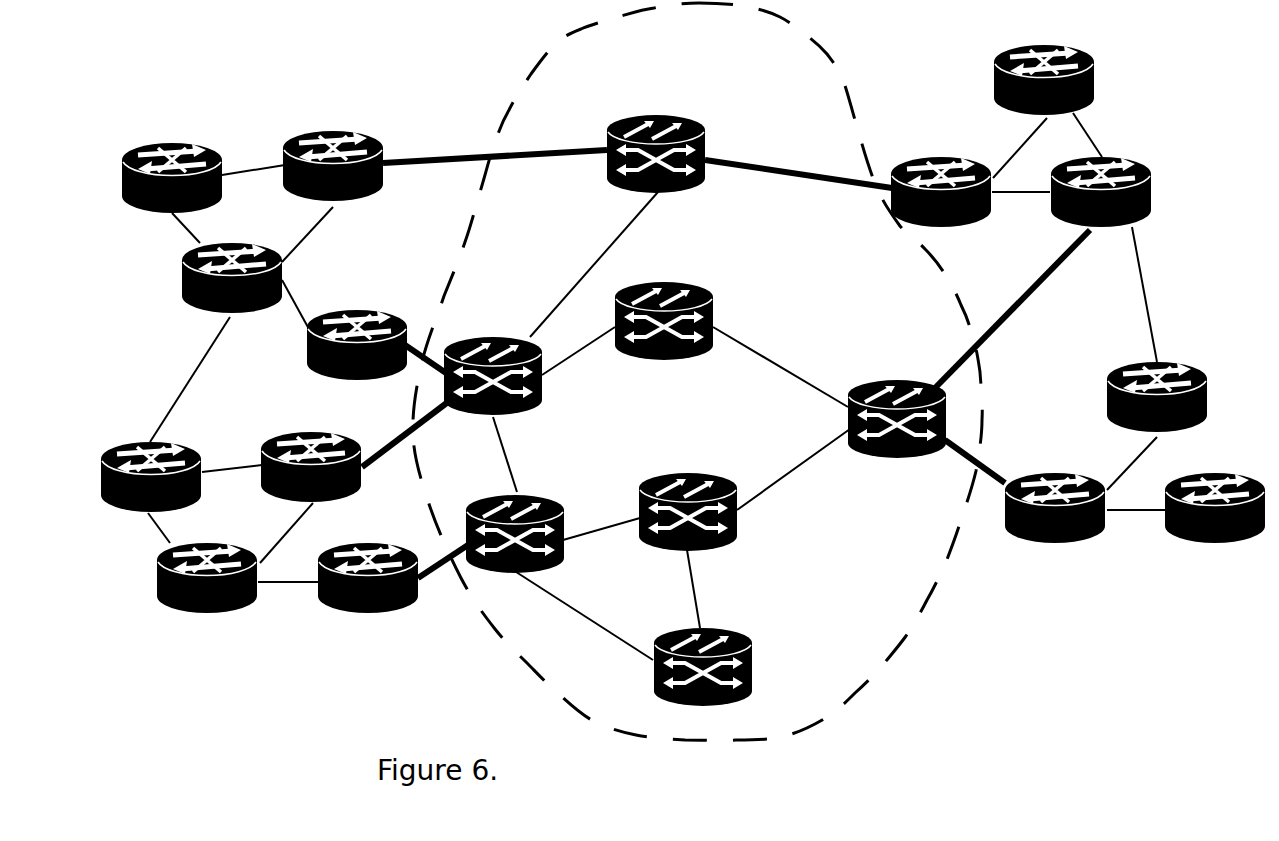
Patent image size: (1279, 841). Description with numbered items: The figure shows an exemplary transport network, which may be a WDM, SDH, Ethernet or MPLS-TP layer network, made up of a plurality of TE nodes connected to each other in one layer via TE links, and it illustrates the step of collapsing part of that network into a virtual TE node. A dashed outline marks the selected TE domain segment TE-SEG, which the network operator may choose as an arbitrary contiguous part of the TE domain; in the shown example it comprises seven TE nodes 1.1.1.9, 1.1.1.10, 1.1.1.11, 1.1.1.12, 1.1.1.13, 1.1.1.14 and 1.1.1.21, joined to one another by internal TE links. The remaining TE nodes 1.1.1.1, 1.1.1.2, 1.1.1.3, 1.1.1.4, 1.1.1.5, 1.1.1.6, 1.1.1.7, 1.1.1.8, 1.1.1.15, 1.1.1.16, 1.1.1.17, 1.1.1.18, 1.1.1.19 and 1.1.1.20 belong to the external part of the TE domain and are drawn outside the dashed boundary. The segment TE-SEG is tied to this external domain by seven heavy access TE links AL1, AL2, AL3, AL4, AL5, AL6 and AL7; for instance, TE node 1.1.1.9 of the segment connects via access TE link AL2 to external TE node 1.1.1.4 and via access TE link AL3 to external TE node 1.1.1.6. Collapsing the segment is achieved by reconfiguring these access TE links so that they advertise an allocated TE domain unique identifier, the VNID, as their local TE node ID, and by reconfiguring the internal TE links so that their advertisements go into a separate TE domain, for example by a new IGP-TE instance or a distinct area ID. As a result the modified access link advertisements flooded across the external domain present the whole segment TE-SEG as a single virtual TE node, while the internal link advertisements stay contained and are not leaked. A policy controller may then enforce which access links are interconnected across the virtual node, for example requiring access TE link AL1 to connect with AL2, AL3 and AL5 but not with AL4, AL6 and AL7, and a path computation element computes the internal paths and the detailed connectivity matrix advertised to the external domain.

The TE node 1.1.1.1 is at (172, 160).
The TE node 1.1.1.2 is at (232, 267).
The TE node 1.1.1.3 is at (333, 147).
The TE node 1.1.1.4 is at (357, 333).
The TE node 1.1.1.5 is at (151, 458).
The TE node 1.1.1.6 is at (311, 455).
The TE node 1.1.1.7 is at (207, 566).
The TE node 1.1.1.8 is at (368, 566).
The TE node 1.1.1.9 is at (493, 358).
The TE node 1.1.1.10 is at (656, 137).
The TE node 1.1.1.11 is at (664, 310).
The TE node 1.1.1.12 is at (688, 501).
The TE node 1.1.1.13 is at (718, 657).
The TE node 1.1.1.14 is at (897, 403).
The TE node 1.1.1.15 is at (941, 178).
The TE node 1.1.1.16 is at (1044, 68).
The TE node 1.1.1.17 is at (1122, 181).
The TE node 1.1.1.18 is at (1181, 387).
The TE node 1.1.1.19 is at (1055, 497).
The TE node 1.1.1.20 is at (1215, 497).
The TE node 1.1.1.21 is at (530, 523).
The access TE link AL1 is at (495, 142).
The access TE link AL2 is at (431, 347).
The access TE link AL3 is at (405, 433).
The access TE link AL4 is at (441, 543).
The access TE link AL5 is at (798, 159).
The access TE link AL6 is at (1007, 309).
The access TE link AL7 is at (977, 457).
The TE domain segment TE-SEG is at (697, 371).